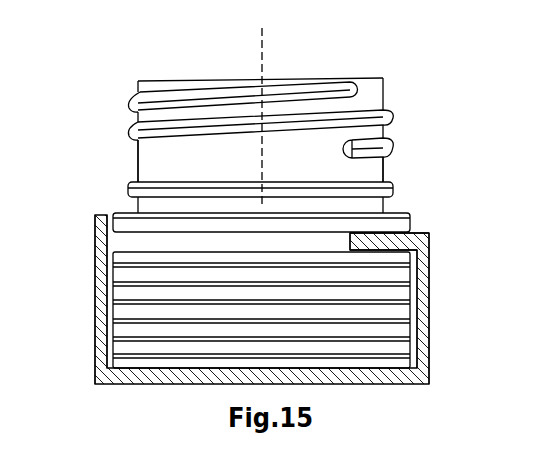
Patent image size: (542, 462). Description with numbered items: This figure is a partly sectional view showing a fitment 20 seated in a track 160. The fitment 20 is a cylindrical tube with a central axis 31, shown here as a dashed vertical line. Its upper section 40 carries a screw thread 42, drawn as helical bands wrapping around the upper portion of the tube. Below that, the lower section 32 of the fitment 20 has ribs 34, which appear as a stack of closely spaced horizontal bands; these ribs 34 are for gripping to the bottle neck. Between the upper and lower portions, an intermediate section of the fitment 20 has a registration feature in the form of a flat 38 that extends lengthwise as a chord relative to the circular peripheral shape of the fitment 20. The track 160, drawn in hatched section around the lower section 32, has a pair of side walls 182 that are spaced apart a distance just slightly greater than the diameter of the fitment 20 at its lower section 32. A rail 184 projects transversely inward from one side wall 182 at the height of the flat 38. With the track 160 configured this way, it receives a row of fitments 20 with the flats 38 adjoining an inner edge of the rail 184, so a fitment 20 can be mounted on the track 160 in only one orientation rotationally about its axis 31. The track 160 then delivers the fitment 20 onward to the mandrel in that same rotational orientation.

The fitment 20 is at (113, 78).
The central axis 31 is at (250, 62).
The screw thread 42 is at (133, 130).
The upper section 40 is at (153, 163).
The flat 38 is at (355, 241).
The track 160 is at (93, 298).
The side walls 182 is at (95, 232).
The rail 184 is at (420, 231).
The lower section 32 is at (138, 328).
The ribs 34 is at (178, 333).